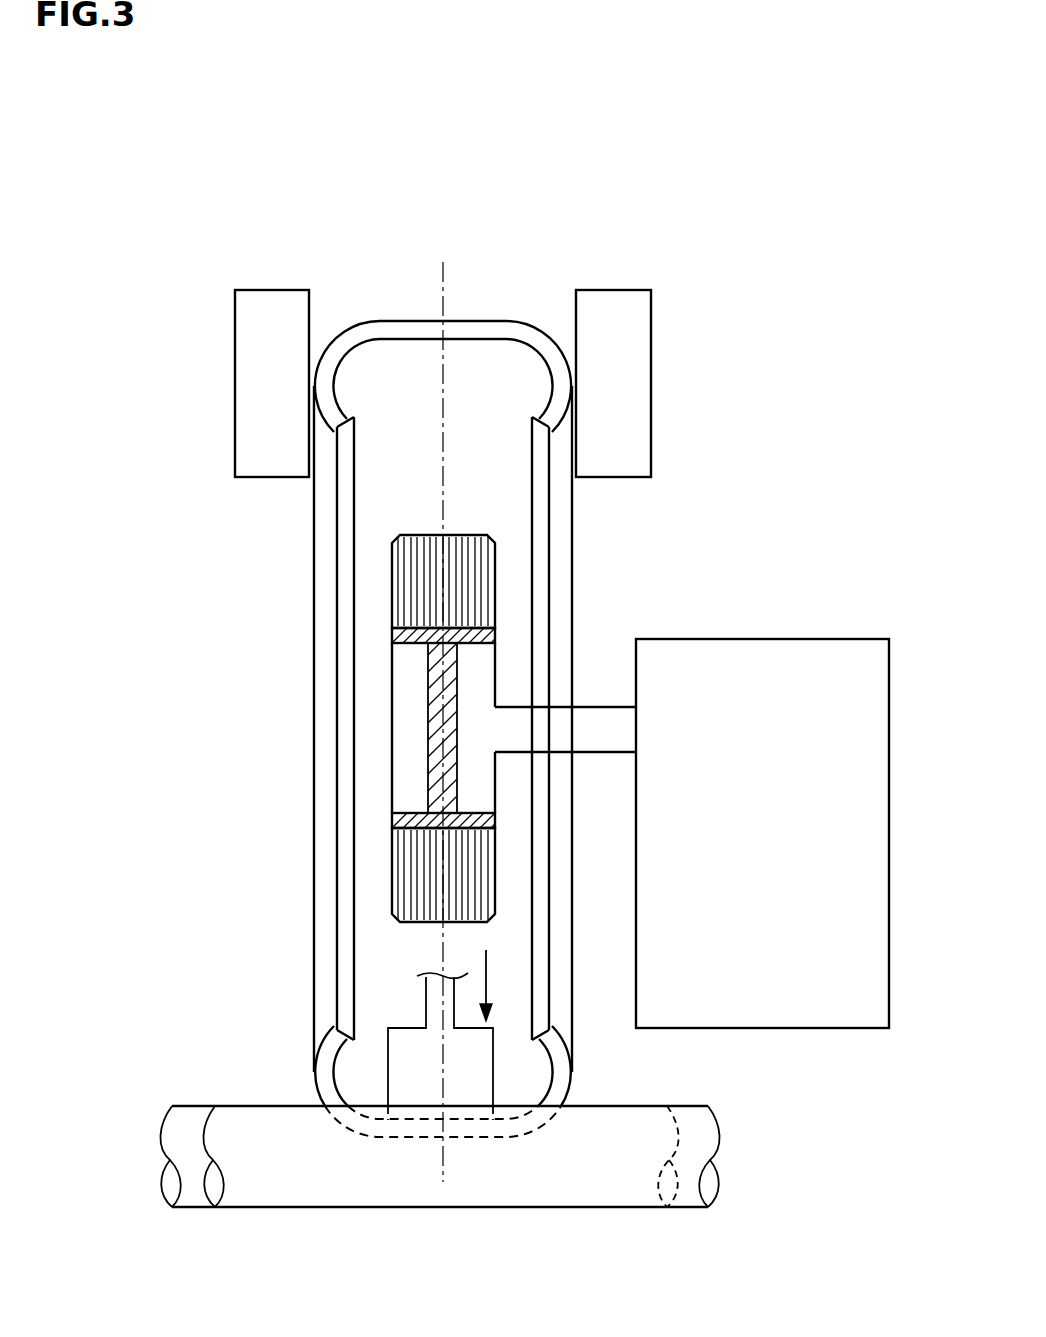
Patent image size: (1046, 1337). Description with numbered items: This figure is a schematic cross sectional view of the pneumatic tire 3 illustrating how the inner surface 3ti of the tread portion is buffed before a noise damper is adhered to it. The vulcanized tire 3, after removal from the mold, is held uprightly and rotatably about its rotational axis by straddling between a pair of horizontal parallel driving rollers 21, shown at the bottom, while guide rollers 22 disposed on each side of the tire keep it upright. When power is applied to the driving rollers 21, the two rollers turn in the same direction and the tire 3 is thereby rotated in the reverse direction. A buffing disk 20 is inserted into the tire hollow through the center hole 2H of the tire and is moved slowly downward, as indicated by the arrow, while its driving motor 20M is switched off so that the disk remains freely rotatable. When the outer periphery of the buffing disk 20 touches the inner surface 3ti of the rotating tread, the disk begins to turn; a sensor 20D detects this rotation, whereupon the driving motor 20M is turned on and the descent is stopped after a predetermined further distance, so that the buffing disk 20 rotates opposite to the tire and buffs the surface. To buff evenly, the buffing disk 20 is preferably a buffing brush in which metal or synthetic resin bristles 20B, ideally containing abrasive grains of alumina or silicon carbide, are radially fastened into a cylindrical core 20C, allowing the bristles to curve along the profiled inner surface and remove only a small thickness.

The pneumatic tire 3 is at (541, 323).
The inner surface of the tread portion 3ti is at (423, 1113).
The center hole 2H is at (538, 560).
The guide rollers 22 is at (254, 367).
The buffing disk 20 is at (388, 572).
The cylindrical core 20C is at (402, 823).
The bristles 20B is at (405, 882).
The driving motor 20M is at (742, 675).
The sensor 20D is at (750, 1002).
The driving rollers 21 is at (193, 1196).